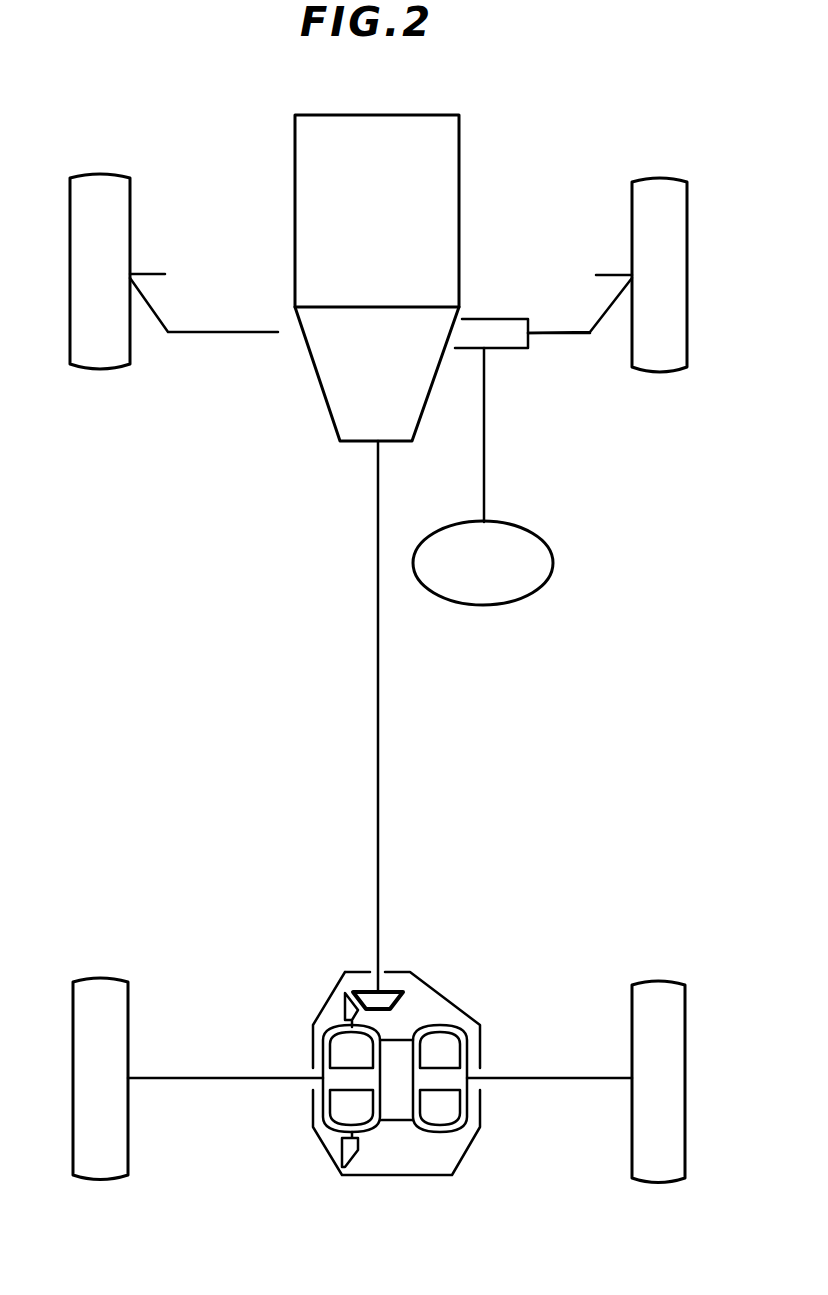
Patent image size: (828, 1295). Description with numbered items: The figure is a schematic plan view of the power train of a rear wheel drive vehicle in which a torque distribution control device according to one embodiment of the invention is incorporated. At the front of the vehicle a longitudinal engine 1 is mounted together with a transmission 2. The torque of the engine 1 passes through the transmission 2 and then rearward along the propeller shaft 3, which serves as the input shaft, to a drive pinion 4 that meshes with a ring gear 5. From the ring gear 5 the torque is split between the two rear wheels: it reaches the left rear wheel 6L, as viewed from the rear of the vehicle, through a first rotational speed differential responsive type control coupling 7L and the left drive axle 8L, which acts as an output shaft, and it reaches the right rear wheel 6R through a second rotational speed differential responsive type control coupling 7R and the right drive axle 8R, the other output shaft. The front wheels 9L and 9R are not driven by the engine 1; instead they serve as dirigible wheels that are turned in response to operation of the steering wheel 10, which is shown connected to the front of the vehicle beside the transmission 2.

The longitudinal engine 1 is at (459, 170).
The transmission 2 is at (328, 400).
The propeller shaft 3 is at (378, 783).
The drive pinion 4 is at (396, 990).
The ring gear 5 is at (343, 1003).
The left rear wheel 6L is at (128, 980).
The right rear wheel 6R is at (655, 978).
The first rotational speed differential responsive type control coupling 7L is at (322, 1133).
The second rotational speed differential responsive type control coupling 7R is at (455, 1138).
The left drive axle 8L is at (200, 1078).
The right drive axle 8R is at (555, 1078).
The left front wheel 9L is at (130, 180).
The right front wheel 9R is at (671, 172).
The steering wheel 10 is at (545, 540).